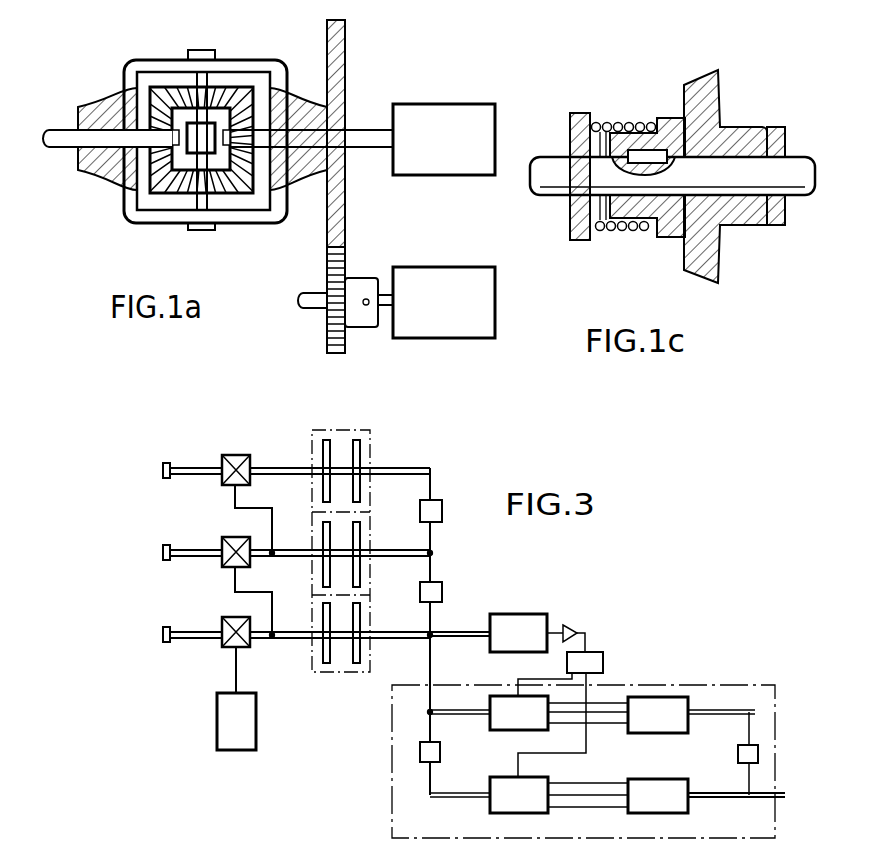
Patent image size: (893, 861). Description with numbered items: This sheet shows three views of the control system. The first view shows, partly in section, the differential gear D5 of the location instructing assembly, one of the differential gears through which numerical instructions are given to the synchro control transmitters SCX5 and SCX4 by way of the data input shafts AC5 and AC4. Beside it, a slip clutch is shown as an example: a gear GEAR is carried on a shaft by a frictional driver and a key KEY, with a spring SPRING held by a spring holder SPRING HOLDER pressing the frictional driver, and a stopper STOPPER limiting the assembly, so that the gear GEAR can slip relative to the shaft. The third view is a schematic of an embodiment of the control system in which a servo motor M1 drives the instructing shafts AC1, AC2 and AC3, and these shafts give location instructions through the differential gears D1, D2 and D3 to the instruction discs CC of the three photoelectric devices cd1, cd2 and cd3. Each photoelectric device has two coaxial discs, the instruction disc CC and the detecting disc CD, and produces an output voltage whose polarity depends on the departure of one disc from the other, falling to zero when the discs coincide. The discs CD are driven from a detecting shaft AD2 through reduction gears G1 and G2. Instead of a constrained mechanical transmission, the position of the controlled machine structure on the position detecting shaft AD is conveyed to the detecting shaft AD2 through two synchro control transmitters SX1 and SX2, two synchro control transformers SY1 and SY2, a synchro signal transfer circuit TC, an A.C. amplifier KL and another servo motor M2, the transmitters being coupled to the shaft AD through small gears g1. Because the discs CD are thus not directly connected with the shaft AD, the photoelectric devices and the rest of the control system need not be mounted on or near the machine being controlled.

In FIG. 1A, the differential gear D5 is at (272, 66).
In FIG. 1A, the data input shaft AC5 is at (57, 130).
In FIG. 1A, the synchro control transmitter SCX5 is at (444, 139).
In FIG. 1A, the synchro control transmitter SCX4 is at (420, 302).
In FIG. 1A, the data input shaft AC4 is at (309, 308).
In FIG. 1C, the spring holder SPRING HOLDER is at (582, 120).
In FIG. 1C, the spring SPRING is at (653, 122).
In FIG. 1C, the key KEY is at (633, 155).
In FIG. 1C, the gear GEAR is at (713, 100).
In FIG. 1C, the stopper STOPPER is at (783, 114).
In FIG. 3, the instructing shaft AC3 is at (188, 468).
In FIG. 3, the instructing shaft AC2 is at (180, 550).
In FIG. 3, the instructing shaft AC1 is at (190, 632).
In FIG. 3, the differential gear D3 is at (246, 452).
In FIG. 3, the differential gear D2 is at (250, 554).
In FIG. 3, the differential gear D1 is at (250, 647).
In FIG. 3, the servo motor M1 is at (236, 698).
In FIG. 3, the instruction disc CC is at (323, 457).
In FIG. 3, the detecting disc CD is at (360, 453).
In FIG. 3, the photoelectric device cd3 is at (362, 494).
In FIG. 3, the photoelectric device cd2 is at (362, 528).
In FIG. 3, the photoelectric device cd1 is at (367, 607).
In FIG. 3, the reduction gear G2 is at (442, 513).
In FIG. 3, the reduction gear G1 is at (445, 590).
In FIG. 3, the detecting shaft AD2 is at (458, 638).
In FIG. 3, the servo motor M2 is at (518, 633).
In FIG. 3, the A.C. amplifier KL is at (579, 633).
In FIG. 3, the synchro signal transfer circuit TC is at (560, 715).
In FIG. 3, the synchro control transformer SY2 is at (528, 713).
In FIG. 3, the synchro control transmitter SX2 is at (691, 721).
In FIG. 3, the synchro control transformer SY1 is at (529, 795).
In FIG. 3, the synchro control transmitter SX1 is at (658, 796).
In FIG. 3, the gear g1 is at (440, 752).
In FIG. 3, the position detecting shaft AD is at (760, 797).